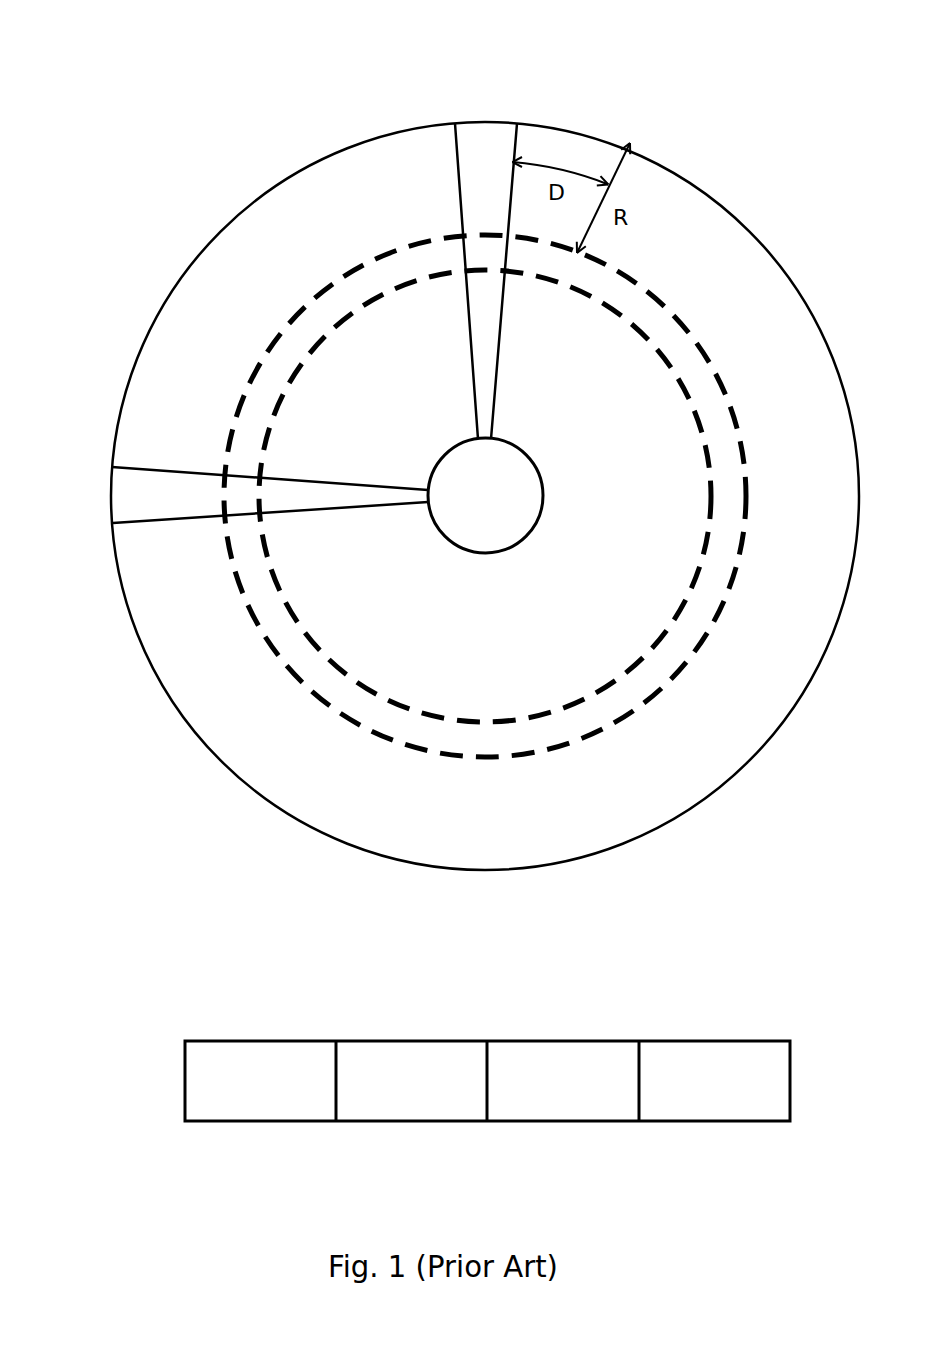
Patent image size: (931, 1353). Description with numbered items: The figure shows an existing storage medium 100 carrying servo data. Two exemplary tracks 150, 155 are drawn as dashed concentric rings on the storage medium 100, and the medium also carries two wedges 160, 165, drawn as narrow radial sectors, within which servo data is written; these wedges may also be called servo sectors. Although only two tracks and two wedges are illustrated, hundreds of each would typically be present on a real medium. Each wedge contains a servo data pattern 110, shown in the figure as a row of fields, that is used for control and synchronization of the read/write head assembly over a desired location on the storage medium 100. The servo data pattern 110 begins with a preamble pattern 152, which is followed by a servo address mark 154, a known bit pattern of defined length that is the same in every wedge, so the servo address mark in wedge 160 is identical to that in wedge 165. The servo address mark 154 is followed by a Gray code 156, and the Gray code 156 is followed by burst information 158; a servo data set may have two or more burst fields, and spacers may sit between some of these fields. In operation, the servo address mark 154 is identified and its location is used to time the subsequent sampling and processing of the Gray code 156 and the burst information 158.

The storage medium 100 is at (115, 72).
The servo data pattern 110 is at (487, 1041).
The track 150 is at (652, 295).
The preamble pattern 152 is at (239, 1112).
The servo address mark 154 is at (390, 1112).
The track 155 is at (665, 358).
The Gray code 156 is at (542, 1112).
The burst information 158 is at (694, 1112).
The wedge 160 is at (487, 128).
The wedge 165 is at (118, 497).